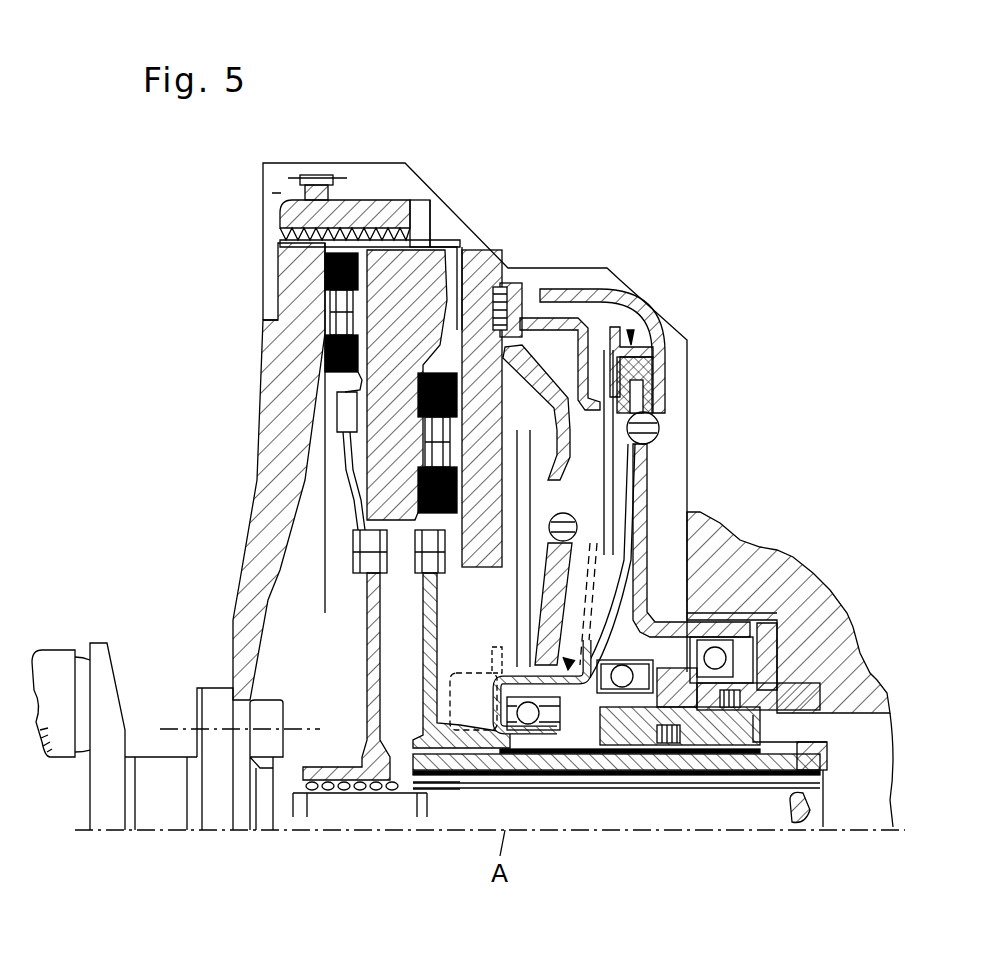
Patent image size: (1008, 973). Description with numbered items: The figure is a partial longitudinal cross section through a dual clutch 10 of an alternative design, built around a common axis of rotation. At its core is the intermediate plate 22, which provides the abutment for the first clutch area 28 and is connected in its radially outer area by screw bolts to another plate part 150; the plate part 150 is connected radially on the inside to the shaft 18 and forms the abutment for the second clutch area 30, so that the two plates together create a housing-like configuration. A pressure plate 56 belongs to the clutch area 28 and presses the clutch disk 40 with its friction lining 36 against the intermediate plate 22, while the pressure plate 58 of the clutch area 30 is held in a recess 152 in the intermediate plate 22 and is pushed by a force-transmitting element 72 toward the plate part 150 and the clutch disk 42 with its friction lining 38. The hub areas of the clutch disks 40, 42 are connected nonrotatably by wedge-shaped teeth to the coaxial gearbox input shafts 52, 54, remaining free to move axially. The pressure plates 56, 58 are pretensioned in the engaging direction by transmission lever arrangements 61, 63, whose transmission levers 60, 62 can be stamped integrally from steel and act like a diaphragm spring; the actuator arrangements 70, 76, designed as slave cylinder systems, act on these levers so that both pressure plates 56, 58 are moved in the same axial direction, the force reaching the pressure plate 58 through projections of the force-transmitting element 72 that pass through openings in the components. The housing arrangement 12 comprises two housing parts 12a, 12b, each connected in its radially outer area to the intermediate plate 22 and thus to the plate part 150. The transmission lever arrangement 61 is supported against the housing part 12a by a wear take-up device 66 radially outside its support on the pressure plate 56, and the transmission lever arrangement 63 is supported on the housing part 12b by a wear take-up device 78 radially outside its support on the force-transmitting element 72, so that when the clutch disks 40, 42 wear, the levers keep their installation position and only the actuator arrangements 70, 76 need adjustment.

The dual clutch 10 is at (527, 103).
The housing arrangement 12 is at (538, 278).
The housing part 12a is at (660, 358).
The housing part 12b is at (648, 328).
The shaft 18 is at (110, 812).
The intermediate plate 22 is at (378, 450).
The clutch area 28 is at (514, 247).
The clutch area 30 is at (387, 160).
The friction lining 36 is at (456, 300).
The friction lining 38 is at (320, 176).
The clutch disk 40 is at (423, 705).
The clutch disk 42 is at (366, 650).
The gearbox input shaft 52 is at (628, 820).
The gearbox input shaft 54 is at (747, 775).
The pressure plate 56 is at (600, 282).
The pressure plate 58 is at (328, 318).
The transmission lever 60 is at (520, 613).
The transmission lever arrangement 61 is at (658, 432).
The transmission lever 62 is at (445, 510).
The transmission lever arrangement 63 is at (640, 390).
The wear take-up device 66 is at (370, 560).
The actuator arrangement 70 is at (632, 535).
The force-transmitting element 72 is at (575, 318).
The actuator arrangement 76 is at (760, 548).
The wear take-up device 78 is at (633, 328).
The plate part 150 is at (288, 387).
The recess 152 is at (380, 382).